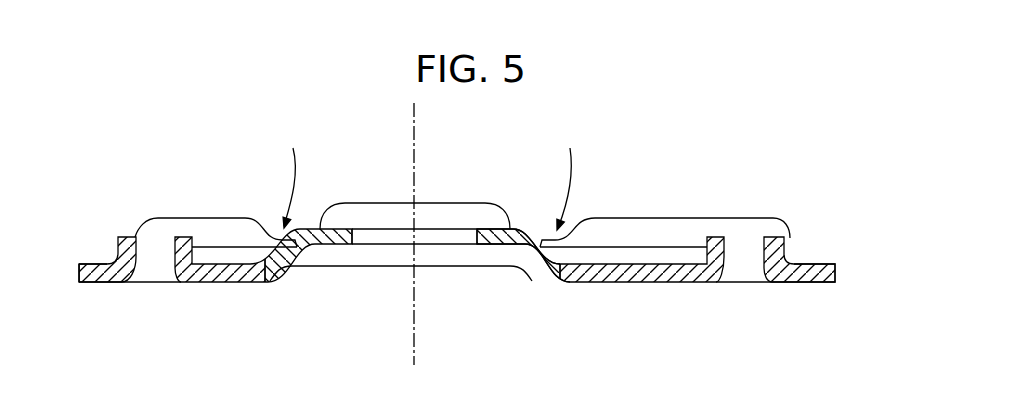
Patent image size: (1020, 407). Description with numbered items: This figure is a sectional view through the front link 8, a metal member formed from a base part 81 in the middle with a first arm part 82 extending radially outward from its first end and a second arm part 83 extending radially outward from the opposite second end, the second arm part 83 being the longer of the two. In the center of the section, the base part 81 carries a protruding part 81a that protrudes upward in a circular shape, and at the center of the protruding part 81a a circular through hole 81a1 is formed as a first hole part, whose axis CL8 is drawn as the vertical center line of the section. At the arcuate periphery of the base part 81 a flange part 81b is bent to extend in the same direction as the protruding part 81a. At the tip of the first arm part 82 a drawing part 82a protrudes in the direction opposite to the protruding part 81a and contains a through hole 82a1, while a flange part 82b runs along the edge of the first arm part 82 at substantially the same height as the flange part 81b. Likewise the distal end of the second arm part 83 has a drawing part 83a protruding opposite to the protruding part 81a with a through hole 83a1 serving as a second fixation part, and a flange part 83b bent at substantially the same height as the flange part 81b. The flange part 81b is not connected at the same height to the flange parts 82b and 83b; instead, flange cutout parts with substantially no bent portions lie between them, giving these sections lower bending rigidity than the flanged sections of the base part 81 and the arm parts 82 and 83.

The front link 8 is at (540, 237).
The base part 81 is at (417, 234).
The protruding part 81a is at (480, 245).
The through hole 81a1 is at (354, 232).
The flange part 81b is at (375, 203).
The first arm part 82 is at (210, 251).
The drawing part 82a is at (100, 263).
The through hole 82a1 is at (152, 257).
The flange part 82b is at (188, 217).
The second arm part 83 is at (661, 253).
The drawing part 83a is at (803, 263).
The through hole 83a1 is at (728, 254).
The flange part 83b is at (674, 217).
The axis CL8 is at (414, 335).